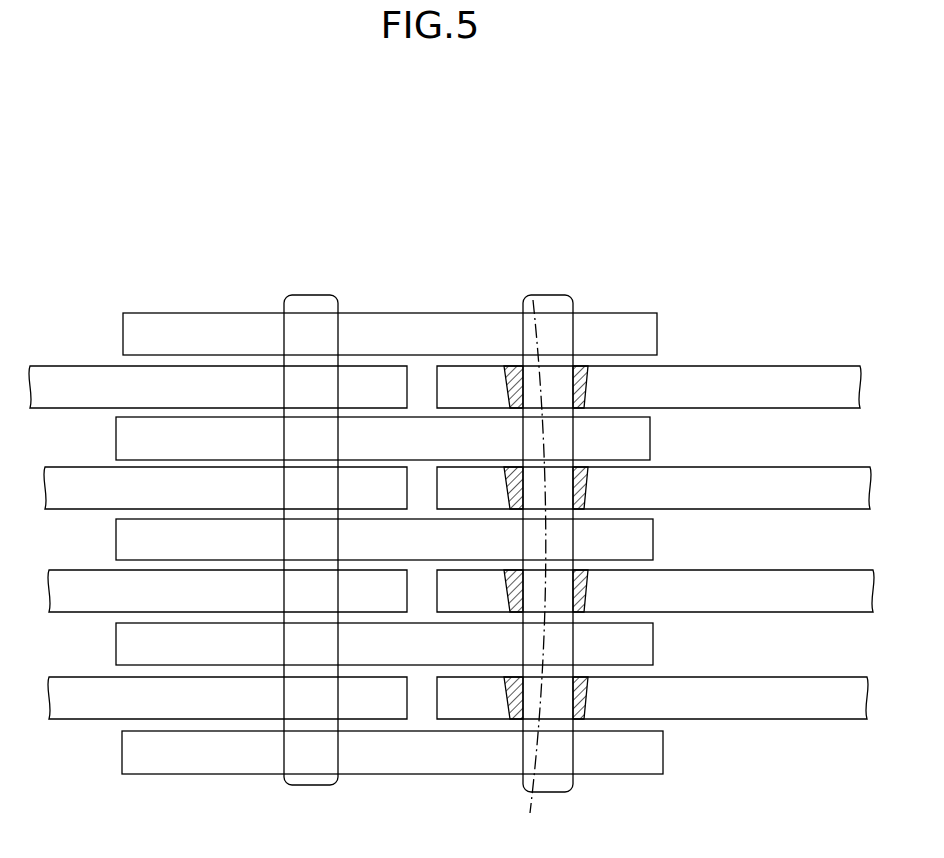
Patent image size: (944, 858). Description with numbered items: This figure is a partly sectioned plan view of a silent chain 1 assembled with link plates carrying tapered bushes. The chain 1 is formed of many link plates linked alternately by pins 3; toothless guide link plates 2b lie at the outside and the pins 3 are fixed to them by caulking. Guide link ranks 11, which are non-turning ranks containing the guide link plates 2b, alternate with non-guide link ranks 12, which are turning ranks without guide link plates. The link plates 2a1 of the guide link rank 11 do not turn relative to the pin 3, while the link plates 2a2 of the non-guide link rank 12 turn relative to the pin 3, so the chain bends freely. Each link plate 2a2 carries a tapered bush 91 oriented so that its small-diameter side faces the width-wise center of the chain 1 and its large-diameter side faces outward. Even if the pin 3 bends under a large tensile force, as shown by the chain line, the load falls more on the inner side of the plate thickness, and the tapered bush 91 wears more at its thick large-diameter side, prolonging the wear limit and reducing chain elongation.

The silent chain 1 is at (402, 188).
The guide link rank 11 is at (418, 307).
The non-guide link rank 12 is at (753, 314).
The link plate of the guide link rank 2a1 is at (642, 447).
The link plate of the non-guide link rank 2a2 is at (814, 372).
The guide link plate 2b is at (220, 327).
The pin 3 is at (320, 300).
The tapered bush 91 is at (588, 382).